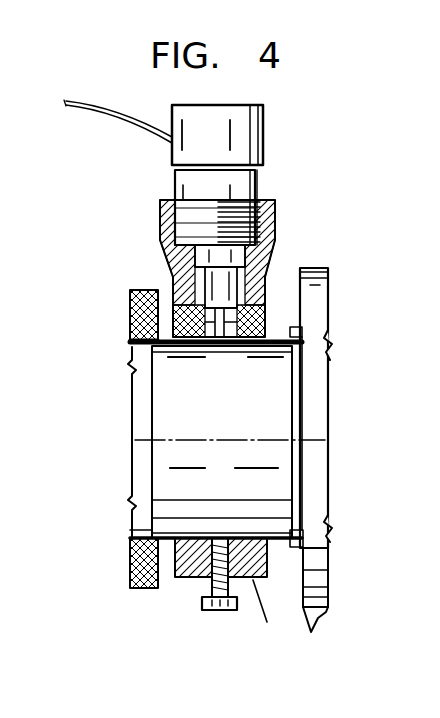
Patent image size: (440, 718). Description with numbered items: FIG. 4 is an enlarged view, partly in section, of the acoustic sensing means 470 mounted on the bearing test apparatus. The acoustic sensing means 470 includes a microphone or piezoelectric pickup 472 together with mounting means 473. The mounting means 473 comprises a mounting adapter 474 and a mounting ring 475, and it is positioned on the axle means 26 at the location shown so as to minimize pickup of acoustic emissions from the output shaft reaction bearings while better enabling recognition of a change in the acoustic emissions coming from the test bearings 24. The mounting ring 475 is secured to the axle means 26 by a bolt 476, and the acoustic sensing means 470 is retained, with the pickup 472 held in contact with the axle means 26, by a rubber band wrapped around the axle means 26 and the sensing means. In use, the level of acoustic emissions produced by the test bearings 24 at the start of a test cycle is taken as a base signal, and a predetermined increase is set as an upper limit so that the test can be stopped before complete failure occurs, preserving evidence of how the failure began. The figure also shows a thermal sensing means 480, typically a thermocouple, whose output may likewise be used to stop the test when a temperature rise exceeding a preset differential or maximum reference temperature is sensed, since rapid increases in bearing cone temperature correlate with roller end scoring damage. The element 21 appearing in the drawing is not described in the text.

The acoustic sensing means 470 is at (292, 150).
The microphone or piezoelectric pickup 472 is at (263, 187).
The mounting adapter 474 is at (277, 233).
The mounting means 473 is at (170, 281).
The test bearings 24 is at (130, 336).
The axle means 26 is at (160, 410).
The plate 21 is at (138, 590).
The thermal sensing means 480 is at (172, 545).
The bolt 476 is at (213, 610).
The mounting ring 475 is at (267, 622).